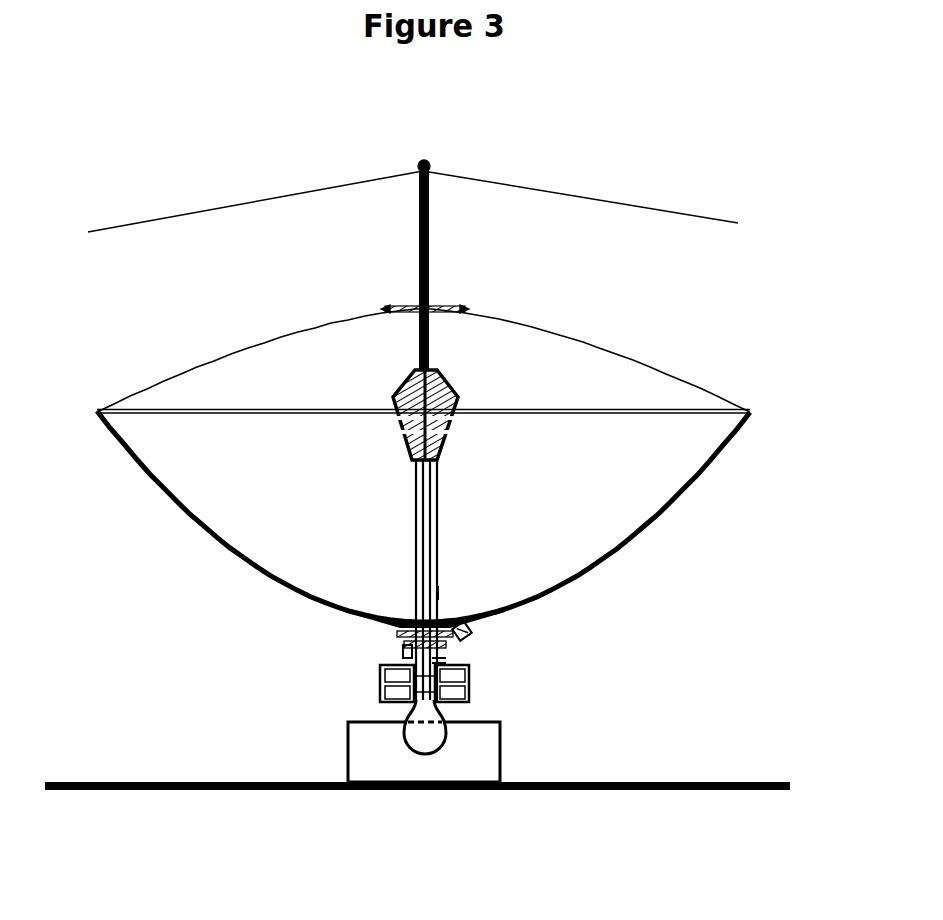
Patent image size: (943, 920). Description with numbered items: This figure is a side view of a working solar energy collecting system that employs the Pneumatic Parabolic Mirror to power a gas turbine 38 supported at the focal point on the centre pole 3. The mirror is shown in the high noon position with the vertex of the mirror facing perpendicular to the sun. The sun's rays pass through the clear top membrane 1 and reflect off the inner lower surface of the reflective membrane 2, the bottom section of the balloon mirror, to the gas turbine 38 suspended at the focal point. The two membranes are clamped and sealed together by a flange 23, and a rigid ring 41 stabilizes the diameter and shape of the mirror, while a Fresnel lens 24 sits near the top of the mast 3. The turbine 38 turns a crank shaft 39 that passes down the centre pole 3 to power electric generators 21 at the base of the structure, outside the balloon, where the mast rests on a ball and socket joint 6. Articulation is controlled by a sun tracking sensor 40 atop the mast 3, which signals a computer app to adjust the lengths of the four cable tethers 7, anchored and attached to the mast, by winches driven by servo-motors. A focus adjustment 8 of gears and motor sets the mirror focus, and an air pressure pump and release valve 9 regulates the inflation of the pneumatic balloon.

The clear top membrane 1 is at (540, 330).
The reflective membrane 2 is at (643, 527).
The centre pole/mast 3 is at (414, 567).
The ball and socket joint 6 is at (432, 736).
The cable tethers 7 is at (283, 200).
The focus adjustment 8 is at (403, 652).
The air pressure pump/release valve 9 is at (470, 630).
The electric generator 21 is at (383, 677).
The flange 23 is at (465, 306).
The Fresnel lens 24 is at (396, 307).
The gas turbine 38 is at (395, 397).
The crank shaft 39 is at (438, 592).
The sun tracking sensor 40 is at (431, 166).
The rigid ring 41 is at (132, 410).